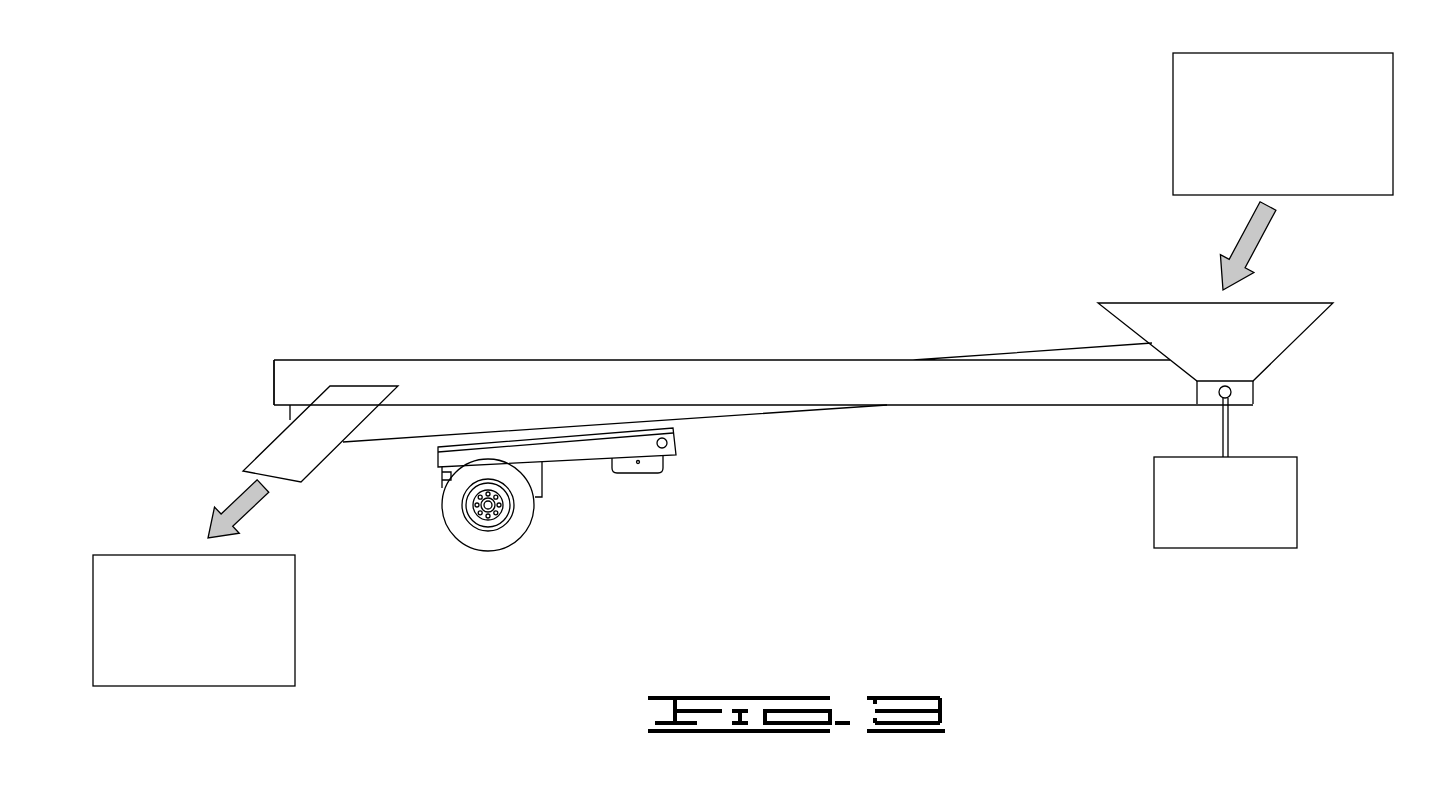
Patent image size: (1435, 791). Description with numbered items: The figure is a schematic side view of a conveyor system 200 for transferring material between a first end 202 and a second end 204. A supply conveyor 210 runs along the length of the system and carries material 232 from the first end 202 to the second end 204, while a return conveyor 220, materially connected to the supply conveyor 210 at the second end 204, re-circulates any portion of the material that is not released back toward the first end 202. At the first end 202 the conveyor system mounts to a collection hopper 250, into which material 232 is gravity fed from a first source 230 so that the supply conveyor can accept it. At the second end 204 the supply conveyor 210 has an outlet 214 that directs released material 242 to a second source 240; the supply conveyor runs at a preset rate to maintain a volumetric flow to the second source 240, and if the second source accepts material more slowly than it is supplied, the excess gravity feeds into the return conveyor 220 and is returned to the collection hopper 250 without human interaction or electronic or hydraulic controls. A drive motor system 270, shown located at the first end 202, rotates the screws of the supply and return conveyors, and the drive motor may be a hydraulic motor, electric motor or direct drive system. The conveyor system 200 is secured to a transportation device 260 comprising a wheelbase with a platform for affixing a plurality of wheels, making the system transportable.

The conveyor system 200 is at (333, 141).
The first end 202 is at (1253, 396).
The second end 204 is at (283, 360).
The supply conveyor 210 is at (682, 360).
The outlet 214 is at (260, 448).
The return conveyor 220 is at (368, 442).
The first source 230 is at (1262, 134).
The material 232 is at (1237, 256).
The second source 240 is at (172, 641).
The released material 242 is at (258, 510).
The collection hopper 250 is at (1312, 303).
The transportation device 260 is at (610, 493).
The drive motor system 270 is at (1204, 518).